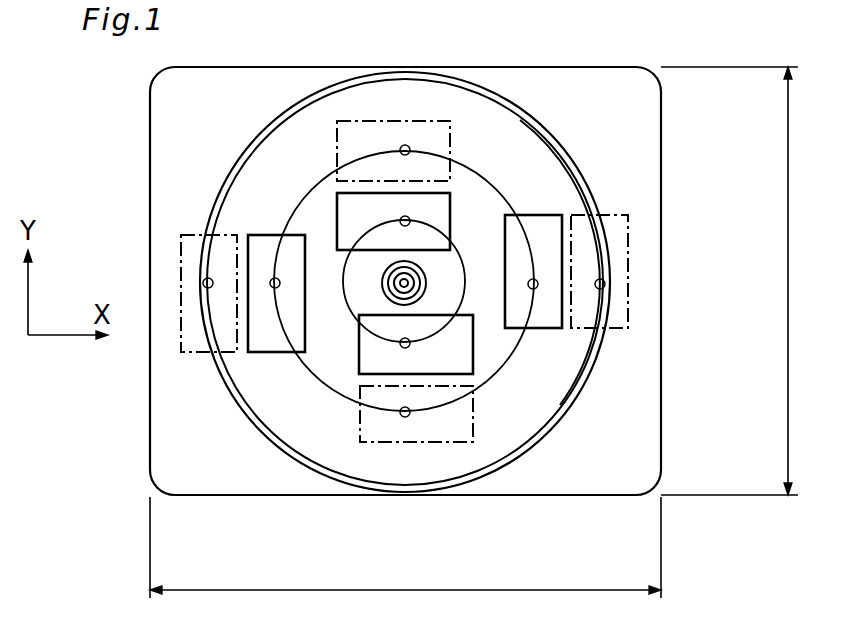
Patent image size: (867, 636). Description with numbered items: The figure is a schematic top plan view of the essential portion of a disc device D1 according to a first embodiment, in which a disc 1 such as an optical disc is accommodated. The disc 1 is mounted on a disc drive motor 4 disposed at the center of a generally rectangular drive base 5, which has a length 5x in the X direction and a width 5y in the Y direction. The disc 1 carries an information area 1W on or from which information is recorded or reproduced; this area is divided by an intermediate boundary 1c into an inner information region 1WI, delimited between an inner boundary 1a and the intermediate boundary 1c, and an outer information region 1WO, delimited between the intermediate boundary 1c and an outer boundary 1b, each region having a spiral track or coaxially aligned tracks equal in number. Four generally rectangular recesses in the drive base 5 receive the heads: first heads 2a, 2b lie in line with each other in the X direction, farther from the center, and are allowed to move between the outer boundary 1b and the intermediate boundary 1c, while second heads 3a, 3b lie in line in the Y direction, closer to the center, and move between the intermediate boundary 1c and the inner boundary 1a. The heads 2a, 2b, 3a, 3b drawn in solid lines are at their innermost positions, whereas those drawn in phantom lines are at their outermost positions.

The disc 1 is at (573, 158).
The inner boundary 1a is at (455, 255).
The outer boundary 1b is at (560, 405).
The intermediate boundary 1c is at (497, 373).
The information area 1W is at (371, 227).
The outer information region 1WO is at (350, 246).
The inner information region 1WI is at (337, 225).
The first head 2a is at (550, 213).
The first head 2b is at (267, 352).
The second head 3a is at (359, 350).
The second head 3b is at (453, 218).
The disc drive motor 4 is at (427, 281).
The drive base 5 is at (661, 383).
The length of drive base 5x is at (405, 547).
The width of drive base 5y is at (729, 281).
The disc device D1 is at (123, 167).